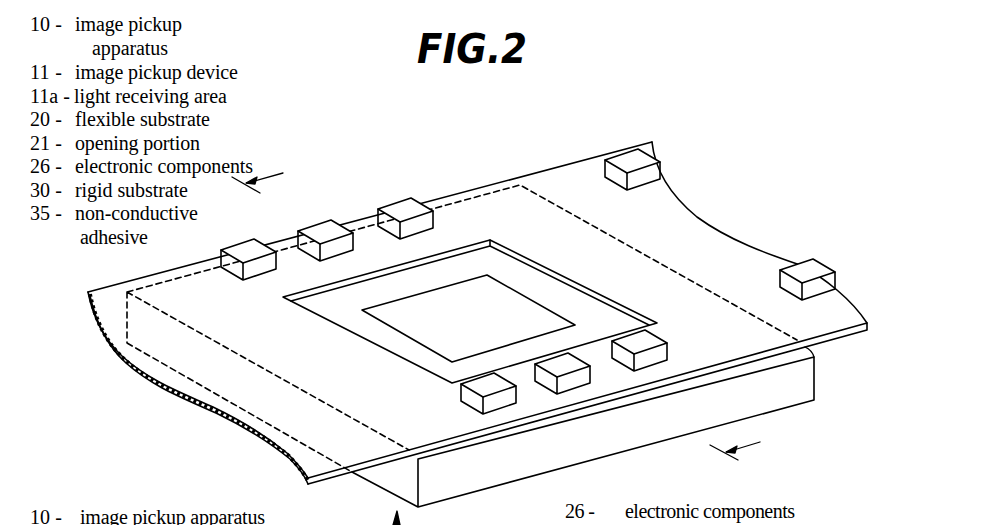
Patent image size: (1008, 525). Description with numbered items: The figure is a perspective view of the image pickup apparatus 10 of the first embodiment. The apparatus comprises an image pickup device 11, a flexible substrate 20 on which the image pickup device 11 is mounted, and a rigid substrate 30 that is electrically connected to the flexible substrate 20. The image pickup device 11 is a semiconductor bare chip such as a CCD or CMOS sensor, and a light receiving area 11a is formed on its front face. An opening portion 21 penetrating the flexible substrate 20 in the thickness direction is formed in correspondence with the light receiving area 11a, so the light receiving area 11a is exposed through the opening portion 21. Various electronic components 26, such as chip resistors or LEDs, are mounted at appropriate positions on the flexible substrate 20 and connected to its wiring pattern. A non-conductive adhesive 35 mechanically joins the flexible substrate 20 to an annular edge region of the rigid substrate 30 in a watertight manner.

The image pickup apparatus 10 is at (502, 151).
The image pickup device 11 is at (484, 264).
The light receiving area 11a is at (523, 305).
The flexible substrate 20 is at (535, 184).
The opening portion 21 is at (469, 251).
The electronic components 26 is at (243, 248).
The rigid substrate 30 is at (470, 346).
The non-conductive adhesive 35 is at (810, 348).